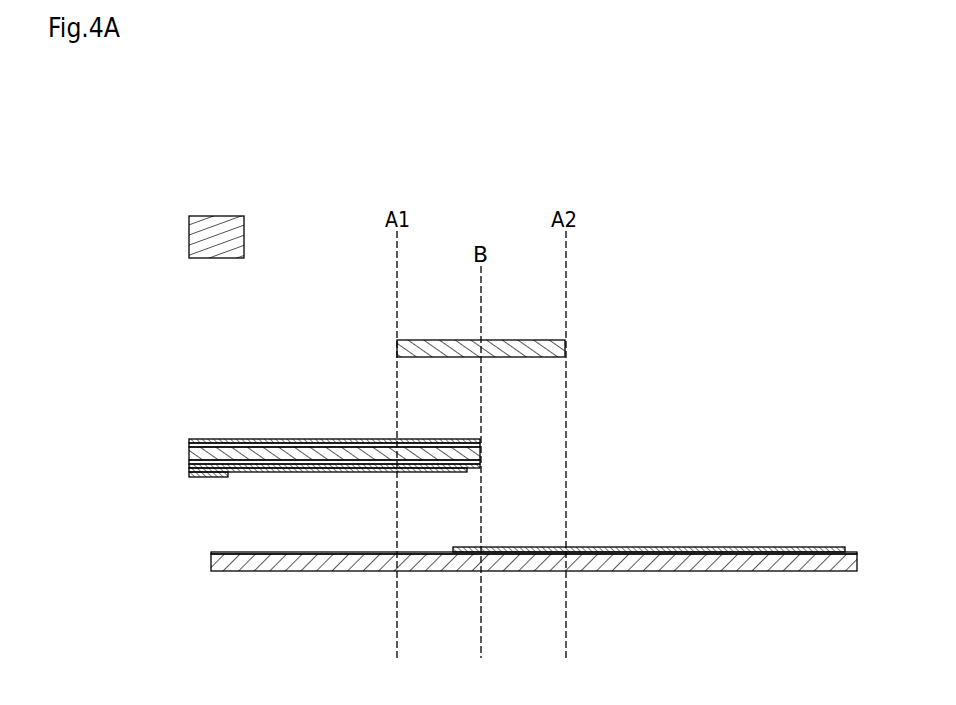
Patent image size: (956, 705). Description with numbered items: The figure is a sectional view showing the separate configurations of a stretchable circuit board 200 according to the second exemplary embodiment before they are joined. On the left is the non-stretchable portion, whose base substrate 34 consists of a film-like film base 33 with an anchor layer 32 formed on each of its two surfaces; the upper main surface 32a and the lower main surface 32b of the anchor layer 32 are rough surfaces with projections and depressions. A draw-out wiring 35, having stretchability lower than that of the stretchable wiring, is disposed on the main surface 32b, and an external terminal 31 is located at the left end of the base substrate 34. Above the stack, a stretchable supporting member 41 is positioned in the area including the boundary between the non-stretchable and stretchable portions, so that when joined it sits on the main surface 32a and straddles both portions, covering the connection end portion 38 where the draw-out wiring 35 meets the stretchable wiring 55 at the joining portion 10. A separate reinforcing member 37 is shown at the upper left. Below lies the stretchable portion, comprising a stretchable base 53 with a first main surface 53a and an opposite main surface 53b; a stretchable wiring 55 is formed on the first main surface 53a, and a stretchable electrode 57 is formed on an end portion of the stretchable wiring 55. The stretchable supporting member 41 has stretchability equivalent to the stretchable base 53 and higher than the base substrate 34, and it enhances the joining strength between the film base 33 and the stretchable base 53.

The stretchable circuit board 200 is at (540, 136).
The reinforcing member 37 is at (223, 216).
The stretchable supporting member 41 is at (517, 340).
The base substrate 34 is at (248, 448).
The anchor layer 32 is at (275, 448).
The main surface 32a is at (189, 440).
The main surface 32b is at (189, 445).
The film base 33 is at (189, 453).
The external terminal 31 is at (208, 477).
The draw-out wiring 35 is at (243, 472).
The joining portion 10 is at (630, 525).
The connection end portion 38 is at (457, 547).
The stretchable wiring 55 is at (633, 547).
The stretchable electrode 57 is at (805, 547).
The stretchable base 53 is at (481, 561).
The main surface 53a is at (226, 553).
The main surface 53b is at (226, 571).